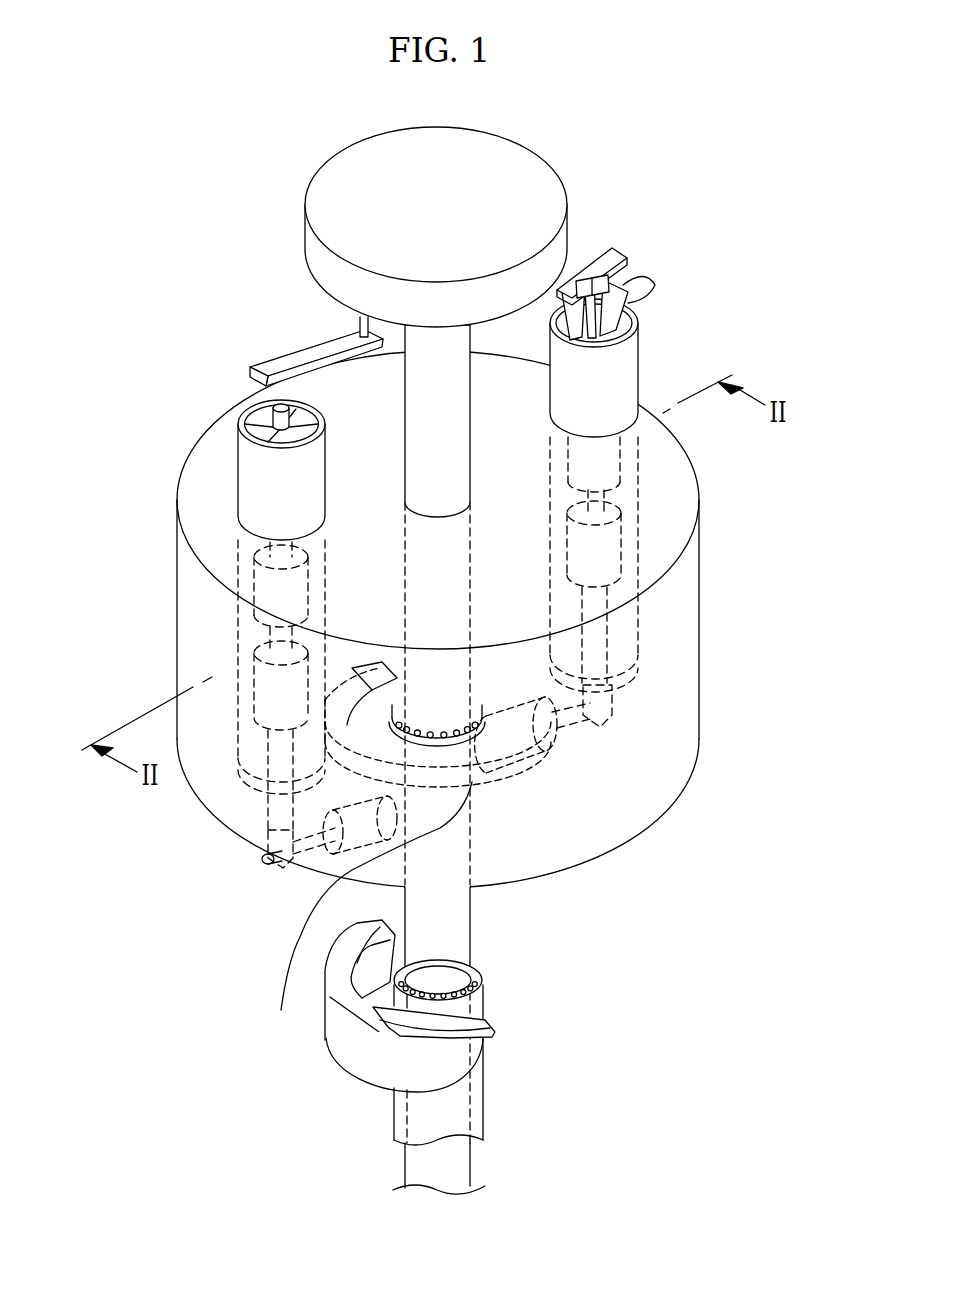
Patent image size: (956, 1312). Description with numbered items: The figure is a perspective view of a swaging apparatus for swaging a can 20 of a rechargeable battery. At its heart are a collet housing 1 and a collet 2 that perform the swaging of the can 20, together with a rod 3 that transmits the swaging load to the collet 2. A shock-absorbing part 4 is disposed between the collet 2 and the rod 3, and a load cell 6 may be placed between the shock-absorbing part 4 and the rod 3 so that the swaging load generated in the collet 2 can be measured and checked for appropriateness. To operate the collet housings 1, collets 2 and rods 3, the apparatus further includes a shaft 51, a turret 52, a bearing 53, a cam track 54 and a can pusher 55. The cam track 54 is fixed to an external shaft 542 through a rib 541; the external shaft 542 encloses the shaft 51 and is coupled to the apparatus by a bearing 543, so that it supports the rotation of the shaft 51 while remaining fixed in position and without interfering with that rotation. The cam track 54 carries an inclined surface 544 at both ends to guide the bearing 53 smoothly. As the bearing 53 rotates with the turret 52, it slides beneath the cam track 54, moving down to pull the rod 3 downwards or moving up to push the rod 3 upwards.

The collet housing 1 is at (630, 360).
The collet 2 is at (618, 303).
The rod 3 is at (607, 636).
The shock-absorbing part 4 is at (622, 458).
The load cell 6 is at (622, 545).
The can 20 is at (620, 268).
The shaft 51 is at (462, 917).
The turret 52 is at (699, 707).
The bearing 53 is at (343, 815).
The cam track 54 is at (338, 1031).
The can pusher 55 is at (591, 264).
The rib 541 is at (386, 1000).
The external shaft 542 is at (485, 1100).
The bearing 543 is at (482, 982).
The inclined surface 544 is at (478, 1050).